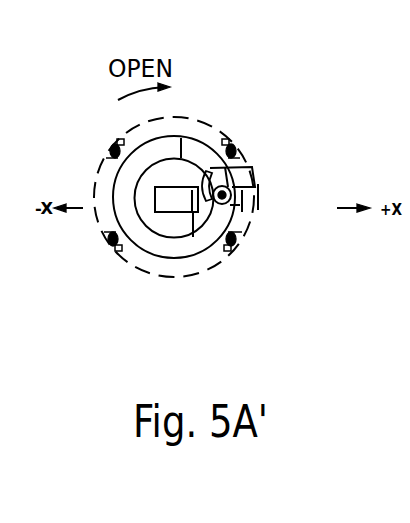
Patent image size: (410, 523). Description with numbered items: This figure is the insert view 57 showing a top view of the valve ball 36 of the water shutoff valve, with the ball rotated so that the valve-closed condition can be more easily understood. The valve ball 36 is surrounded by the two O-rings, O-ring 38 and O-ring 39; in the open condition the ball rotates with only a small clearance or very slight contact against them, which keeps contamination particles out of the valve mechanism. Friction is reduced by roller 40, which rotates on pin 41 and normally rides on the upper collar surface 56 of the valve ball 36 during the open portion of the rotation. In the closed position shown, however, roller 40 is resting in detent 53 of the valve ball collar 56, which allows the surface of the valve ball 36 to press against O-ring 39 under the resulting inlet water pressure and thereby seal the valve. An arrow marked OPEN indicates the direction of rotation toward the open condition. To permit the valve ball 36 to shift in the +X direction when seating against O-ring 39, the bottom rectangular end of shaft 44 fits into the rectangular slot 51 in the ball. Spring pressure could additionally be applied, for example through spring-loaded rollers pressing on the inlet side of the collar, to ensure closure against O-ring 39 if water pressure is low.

The valve ball 36 is at (155, 245).
The O-ring 38 is at (110, 151).
The O-ring seal 39 is at (243, 150).
The roller 40 is at (258, 187).
The pin 41 is at (235, 203).
The shaft 44 is at (172, 198).
The rectangular slot 51 is at (190, 236).
The detent 53 is at (242, 172).
The upper collar surface 56 is at (181, 138).
The insert view 57 is at (197, 277).